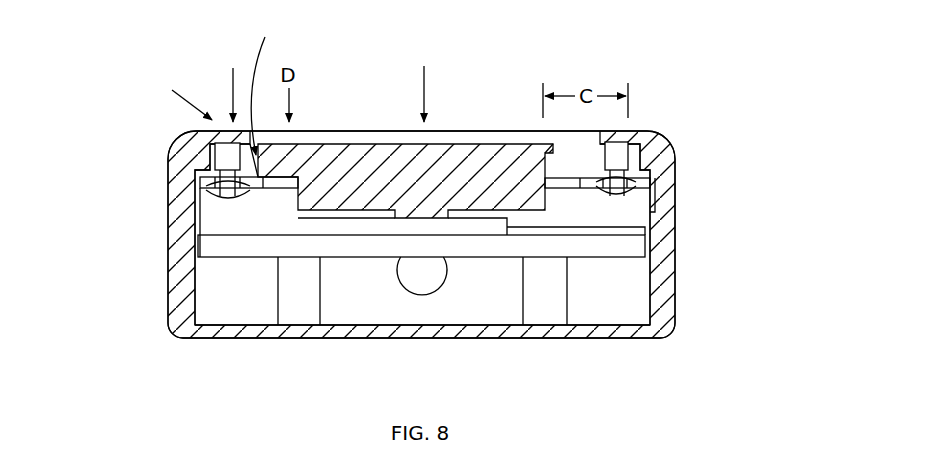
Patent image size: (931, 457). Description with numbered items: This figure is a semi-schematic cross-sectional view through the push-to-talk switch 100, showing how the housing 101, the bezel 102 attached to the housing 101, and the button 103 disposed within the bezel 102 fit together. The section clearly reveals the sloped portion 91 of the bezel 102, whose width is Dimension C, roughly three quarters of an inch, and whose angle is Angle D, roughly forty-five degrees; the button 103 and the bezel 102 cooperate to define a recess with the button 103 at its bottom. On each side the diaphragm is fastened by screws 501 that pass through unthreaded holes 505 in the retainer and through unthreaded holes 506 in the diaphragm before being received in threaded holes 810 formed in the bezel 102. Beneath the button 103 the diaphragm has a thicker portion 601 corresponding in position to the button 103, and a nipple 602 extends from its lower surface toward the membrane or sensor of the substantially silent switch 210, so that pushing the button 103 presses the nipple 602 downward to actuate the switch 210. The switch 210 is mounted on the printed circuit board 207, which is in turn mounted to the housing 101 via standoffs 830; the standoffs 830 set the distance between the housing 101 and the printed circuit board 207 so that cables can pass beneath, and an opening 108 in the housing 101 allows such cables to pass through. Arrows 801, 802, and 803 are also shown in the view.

The push-to-talk switch 100 is at (130, 280).
The housing 101 is at (588, 340).
The bezel 102 is at (665, 135).
The button 103 is at (372, 128).
The sloped portion 91 is at (306, 140).
The unthreaded holes 506 is at (215, 172).
The screws 501 is at (205, 192).
The unthreaded holes 505 is at (225, 196).
The thicker portion 601 is at (327, 212).
The nipple 602 is at (490, 214).
The switch 210 is at (468, 228).
The printed circuit board 207 is at (363, 257).
The standoffs 830 is at (324, 309).
The opening 108 is at (437, 283).
The force arrow 801 is at (424, 72).
The force arrow 802 is at (233, 80).
The force arrow 803 is at (172, 90).
The threaded holes 810 is at (267, 84).